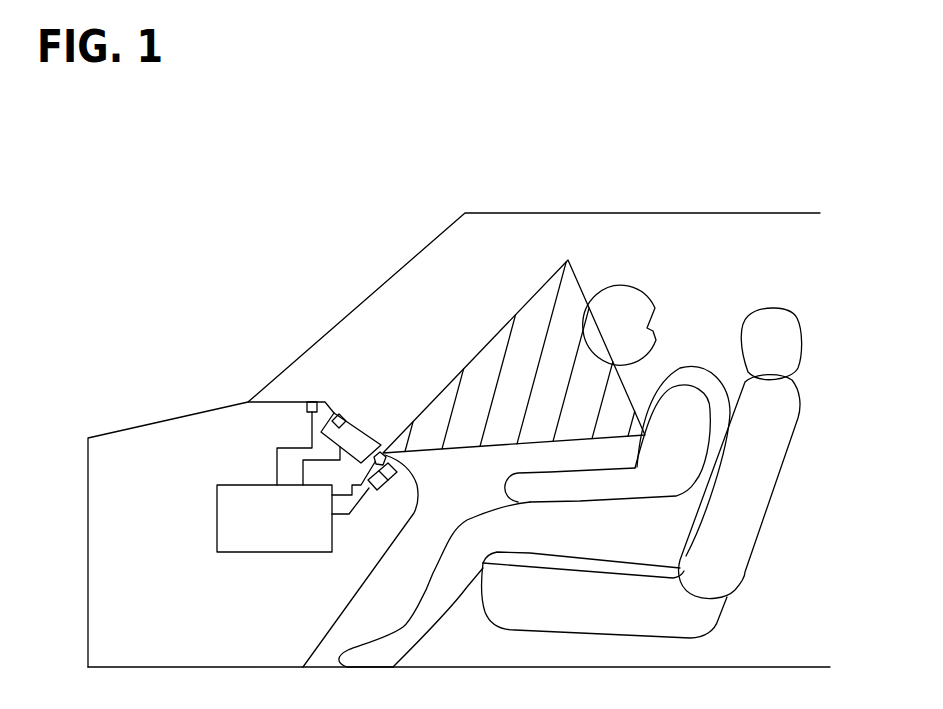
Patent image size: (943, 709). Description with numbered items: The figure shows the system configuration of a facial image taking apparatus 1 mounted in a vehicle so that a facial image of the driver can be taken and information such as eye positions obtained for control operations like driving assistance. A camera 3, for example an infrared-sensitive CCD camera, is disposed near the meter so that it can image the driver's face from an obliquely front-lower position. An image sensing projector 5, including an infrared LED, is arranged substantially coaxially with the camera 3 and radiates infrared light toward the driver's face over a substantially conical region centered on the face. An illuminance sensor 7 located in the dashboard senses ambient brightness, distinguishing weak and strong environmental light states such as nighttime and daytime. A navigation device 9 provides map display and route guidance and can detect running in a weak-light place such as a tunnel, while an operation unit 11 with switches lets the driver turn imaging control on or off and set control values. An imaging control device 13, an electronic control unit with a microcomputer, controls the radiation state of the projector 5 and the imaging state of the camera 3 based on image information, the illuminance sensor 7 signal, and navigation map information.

The facial image taking apparatus 1 is at (166, 246).
The camera 3 is at (377, 492).
The image sensing projector 5 is at (381, 446).
The illuminance sensor 7 is at (312, 402).
The navigation device 9 is at (358, 440).
The operation unit 11 is at (352, 408).
The imaging control device 13 is at (250, 552).